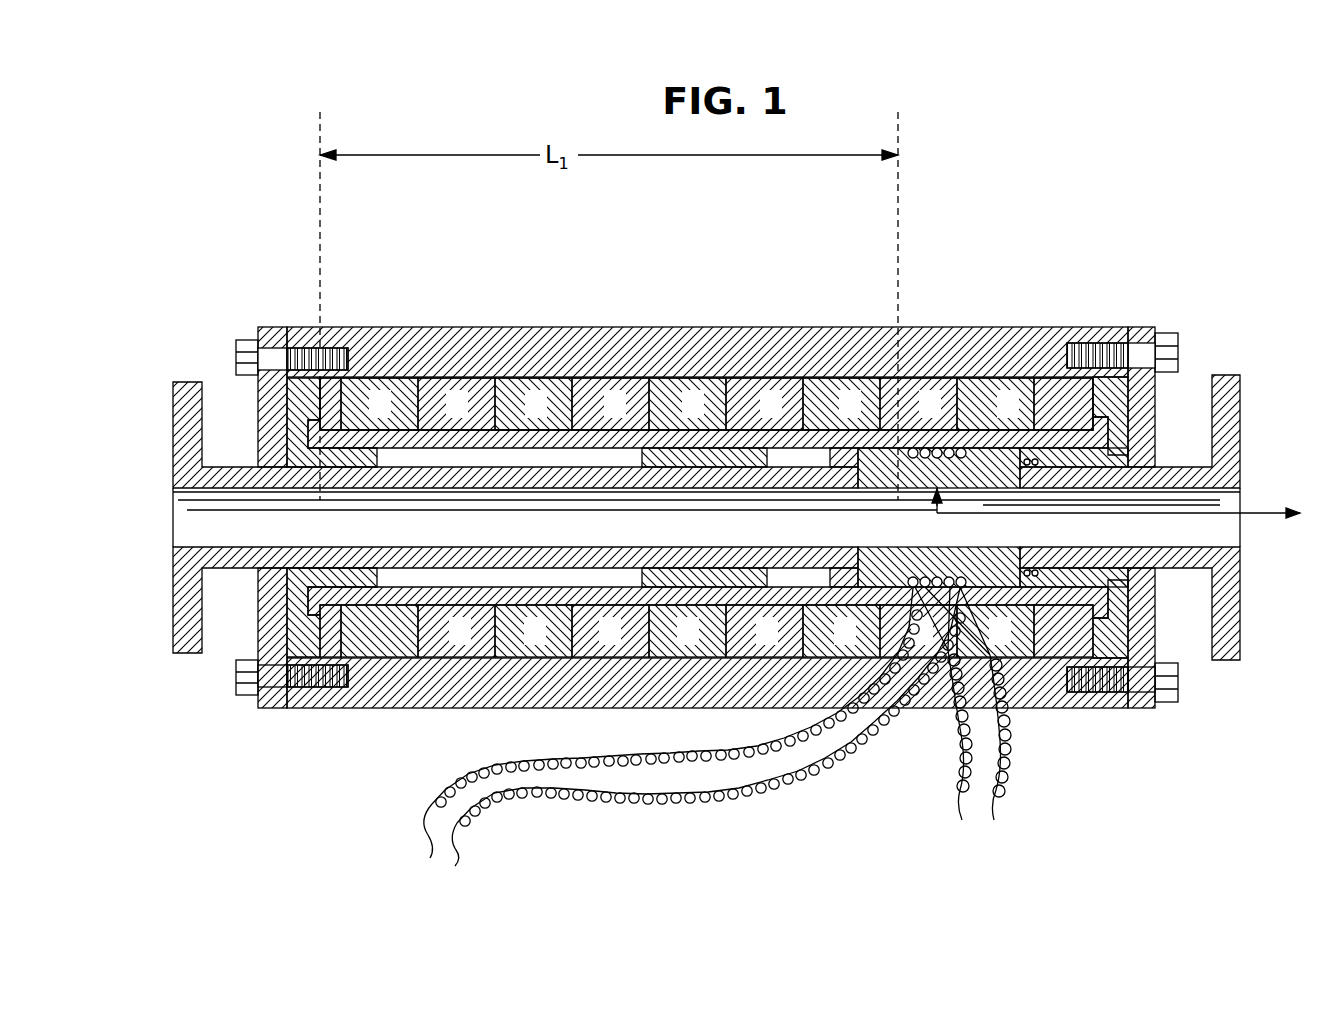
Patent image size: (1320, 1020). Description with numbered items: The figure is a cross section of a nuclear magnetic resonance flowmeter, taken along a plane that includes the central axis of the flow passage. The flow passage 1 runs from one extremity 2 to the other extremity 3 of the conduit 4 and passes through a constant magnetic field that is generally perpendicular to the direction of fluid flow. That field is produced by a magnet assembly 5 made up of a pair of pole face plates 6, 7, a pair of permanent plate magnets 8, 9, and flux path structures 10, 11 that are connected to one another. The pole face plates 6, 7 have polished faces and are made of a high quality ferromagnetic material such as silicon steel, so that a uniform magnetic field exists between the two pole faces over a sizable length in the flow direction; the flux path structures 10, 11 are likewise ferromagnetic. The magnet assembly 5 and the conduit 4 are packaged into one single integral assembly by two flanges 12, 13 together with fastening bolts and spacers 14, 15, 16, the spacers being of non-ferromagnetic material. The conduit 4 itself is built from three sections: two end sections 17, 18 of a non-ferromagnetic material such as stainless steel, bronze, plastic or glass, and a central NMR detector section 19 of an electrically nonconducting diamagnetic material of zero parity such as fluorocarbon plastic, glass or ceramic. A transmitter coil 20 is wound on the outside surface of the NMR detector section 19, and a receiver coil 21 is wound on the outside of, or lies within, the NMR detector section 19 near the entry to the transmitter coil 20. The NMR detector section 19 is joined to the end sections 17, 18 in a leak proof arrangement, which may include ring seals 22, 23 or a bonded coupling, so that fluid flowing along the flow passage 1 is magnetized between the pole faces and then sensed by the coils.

The flow passage 1 is at (238, 513).
The extremity 2 is at (173, 500).
The extremity 3 is at (1240, 503).
The conduit 4 is at (250, 548).
The magnet assembly 5 is at (393, 378).
The pole face plate 6 is at (440, 432).
The pole face plate 7 is at (427, 640).
The permanent plate magnet 8 is at (505, 390).
The permanent plate magnet 9 is at (417, 593).
The flux path structure 10 is at (578, 350).
The flux path structure 11 is at (468, 700).
The flange 12 is at (258, 643).
The flange 13 is at (1160, 622).
The spacer 14 is at (338, 392).
The spacer 15 is at (663, 455).
The spacer 16 is at (1157, 410).
The end section 17 is at (852, 462).
The end section 18 is at (1060, 550).
The NMR detector section 19 is at (1023, 458).
The transmitter coil 20 is at (1045, 285).
The receiver coil 21 is at (963, 285).
The ring seal 22 is at (797, 458).
The ring seal 23 is at (1150, 450).